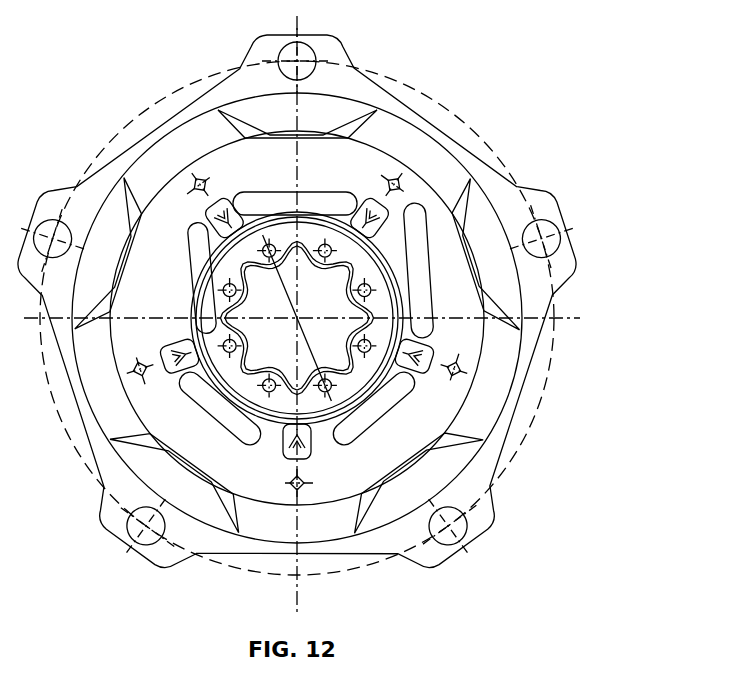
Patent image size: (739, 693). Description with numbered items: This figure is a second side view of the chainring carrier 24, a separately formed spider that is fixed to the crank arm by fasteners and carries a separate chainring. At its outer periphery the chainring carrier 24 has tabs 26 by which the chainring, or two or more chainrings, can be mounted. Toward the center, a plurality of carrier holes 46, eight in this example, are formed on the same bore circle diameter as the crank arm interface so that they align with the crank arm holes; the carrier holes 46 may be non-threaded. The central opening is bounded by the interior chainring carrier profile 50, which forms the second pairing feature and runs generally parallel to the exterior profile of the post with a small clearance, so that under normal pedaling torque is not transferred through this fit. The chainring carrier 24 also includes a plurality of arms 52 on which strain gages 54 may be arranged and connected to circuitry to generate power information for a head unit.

The chainring carrier 24 is at (333, 50).
The tabs 26 is at (561, 283).
The carrier holes 46 is at (243, 348).
The interior chainring carrier profile 50 is at (345, 291).
The arms 52 is at (388, 233).
The strain gages 54 is at (378, 207).